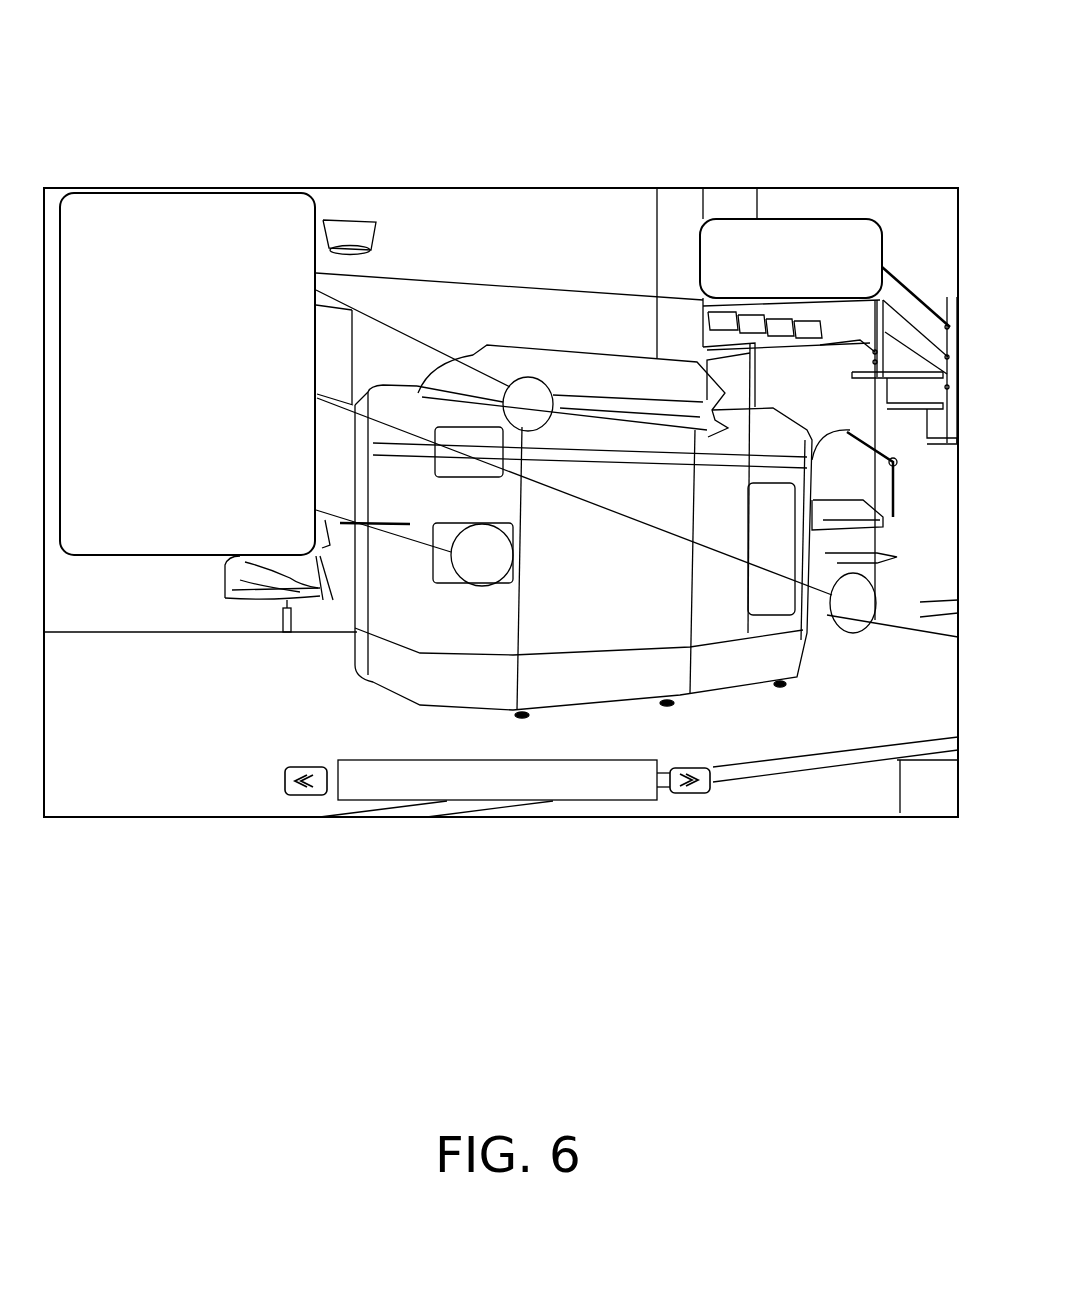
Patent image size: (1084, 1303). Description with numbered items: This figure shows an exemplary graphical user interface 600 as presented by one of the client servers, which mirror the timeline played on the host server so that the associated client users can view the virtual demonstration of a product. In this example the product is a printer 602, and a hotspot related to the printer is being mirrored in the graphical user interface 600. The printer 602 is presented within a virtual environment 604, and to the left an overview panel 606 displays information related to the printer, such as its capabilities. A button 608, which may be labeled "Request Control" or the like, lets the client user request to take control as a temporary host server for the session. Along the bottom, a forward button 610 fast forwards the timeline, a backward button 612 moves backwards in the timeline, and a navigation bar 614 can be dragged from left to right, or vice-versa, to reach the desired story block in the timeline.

The graphical user interface 600 is at (858, 144).
The printer 602 is at (615, 406).
The virtual environment 604 is at (639, 823).
The overview panel 606 is at (197, 545).
The button 608 is at (797, 267).
The forward button 610 is at (686, 834).
The backward button 612 is at (309, 834).
The navigation bar 614 is at (504, 831).